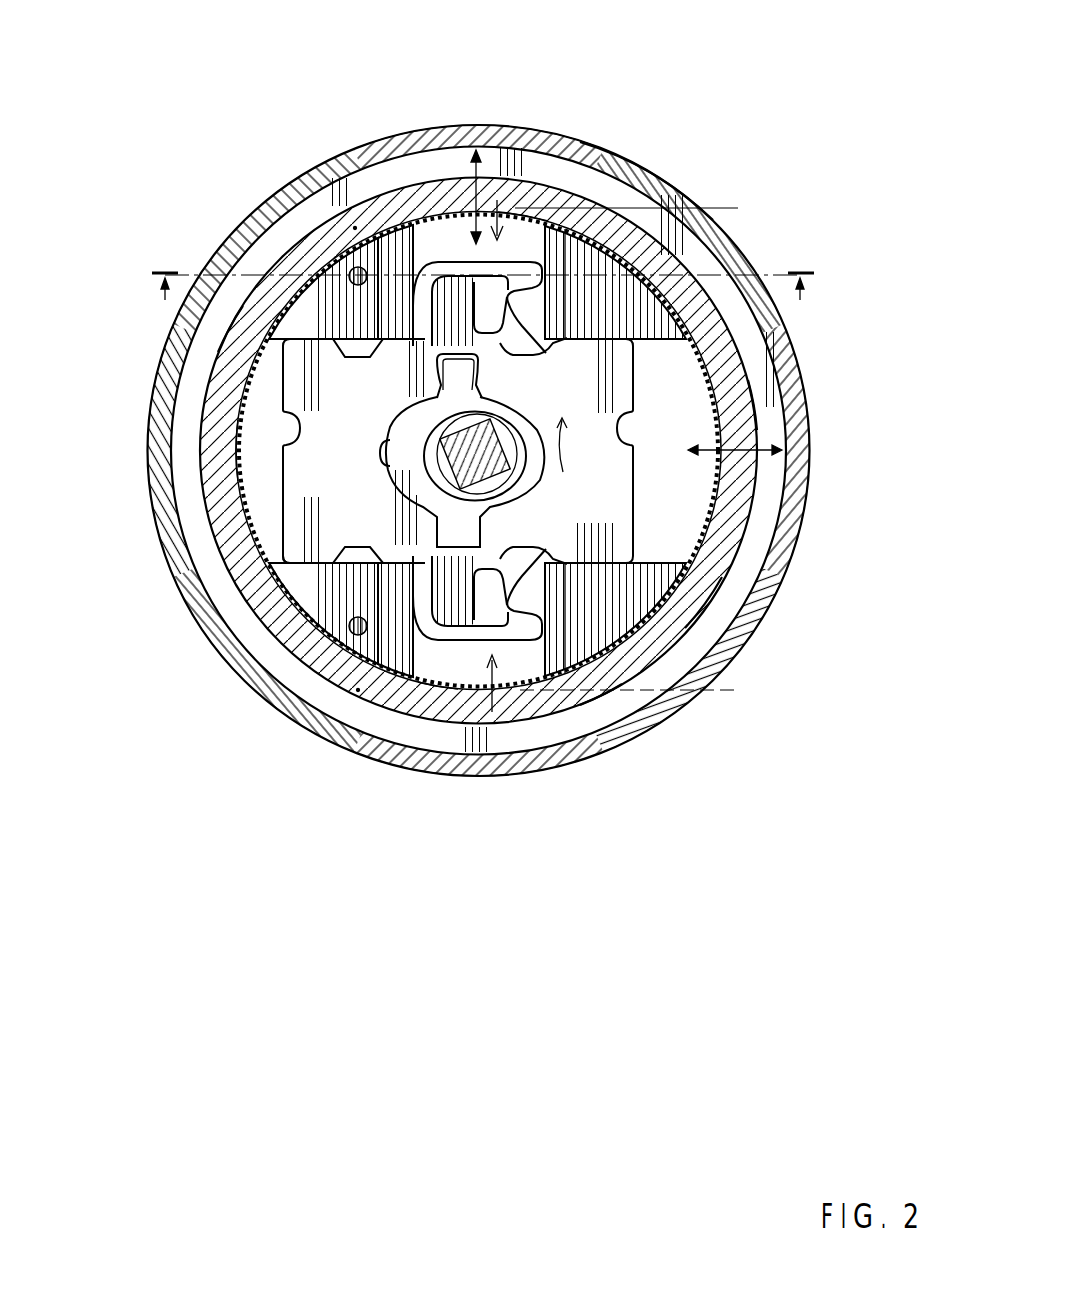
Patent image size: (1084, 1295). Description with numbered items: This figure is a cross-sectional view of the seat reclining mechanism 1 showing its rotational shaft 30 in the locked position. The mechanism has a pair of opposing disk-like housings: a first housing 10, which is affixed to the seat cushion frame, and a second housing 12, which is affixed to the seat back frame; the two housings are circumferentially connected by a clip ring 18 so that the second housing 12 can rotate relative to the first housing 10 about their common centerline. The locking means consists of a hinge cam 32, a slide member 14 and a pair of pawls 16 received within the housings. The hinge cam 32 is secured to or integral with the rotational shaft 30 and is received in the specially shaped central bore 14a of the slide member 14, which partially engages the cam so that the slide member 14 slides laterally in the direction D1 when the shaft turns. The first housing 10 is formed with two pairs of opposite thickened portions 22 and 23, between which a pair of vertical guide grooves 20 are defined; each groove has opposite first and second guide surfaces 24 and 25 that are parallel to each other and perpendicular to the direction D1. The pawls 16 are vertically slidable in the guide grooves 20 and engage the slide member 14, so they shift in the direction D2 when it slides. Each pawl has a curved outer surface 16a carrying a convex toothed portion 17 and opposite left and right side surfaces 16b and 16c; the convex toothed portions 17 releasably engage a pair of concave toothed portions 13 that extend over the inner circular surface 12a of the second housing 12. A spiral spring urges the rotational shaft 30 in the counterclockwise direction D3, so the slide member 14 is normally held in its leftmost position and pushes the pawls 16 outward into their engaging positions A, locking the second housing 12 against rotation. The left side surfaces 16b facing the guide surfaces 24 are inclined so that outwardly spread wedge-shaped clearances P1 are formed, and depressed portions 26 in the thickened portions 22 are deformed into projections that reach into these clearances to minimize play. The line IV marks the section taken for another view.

The seat reclining mechanism 1 is at (727, 168).
The first housing 10 is at (805, 455).
The second housing 12 is at (283, 470).
The inner circular surface 12a is at (242, 447).
The concave toothed portions 13 is at (232, 398).
The slide member 14 is at (600, 472).
The central bore 14a is at (290, 565).
The pawls 16 is at (443, 195).
The curved outer surface 16a is at (368, 222).
The left side surface 16b is at (375, 228).
The right side surface 16c is at (598, 232).
The convex toothed portion 17 is at (522, 212).
The clip ring 18 is at (650, 168).
The guide grooves 20 is at (497, 198).
The thickened portions 22 is at (268, 338).
The thickened portions 23 is at (740, 385).
The first guide surface 24 is at (383, 346).
The second guide surface 25 is at (568, 342).
The depressed portions 26 is at (350, 268).
The rotational shaft 30 is at (400, 470).
The hinge cam 32 is at (452, 400).
The engaging positions A is at (641, 448).
The direction of slide member movement D1 is at (785, 456).
The direction of pawl movement D2 is at (470, 195).
The biasing direction D3 is at (582, 445).
The wedge shaped clearances P1 is at (352, 225).
The section line IV is at (484, 295).